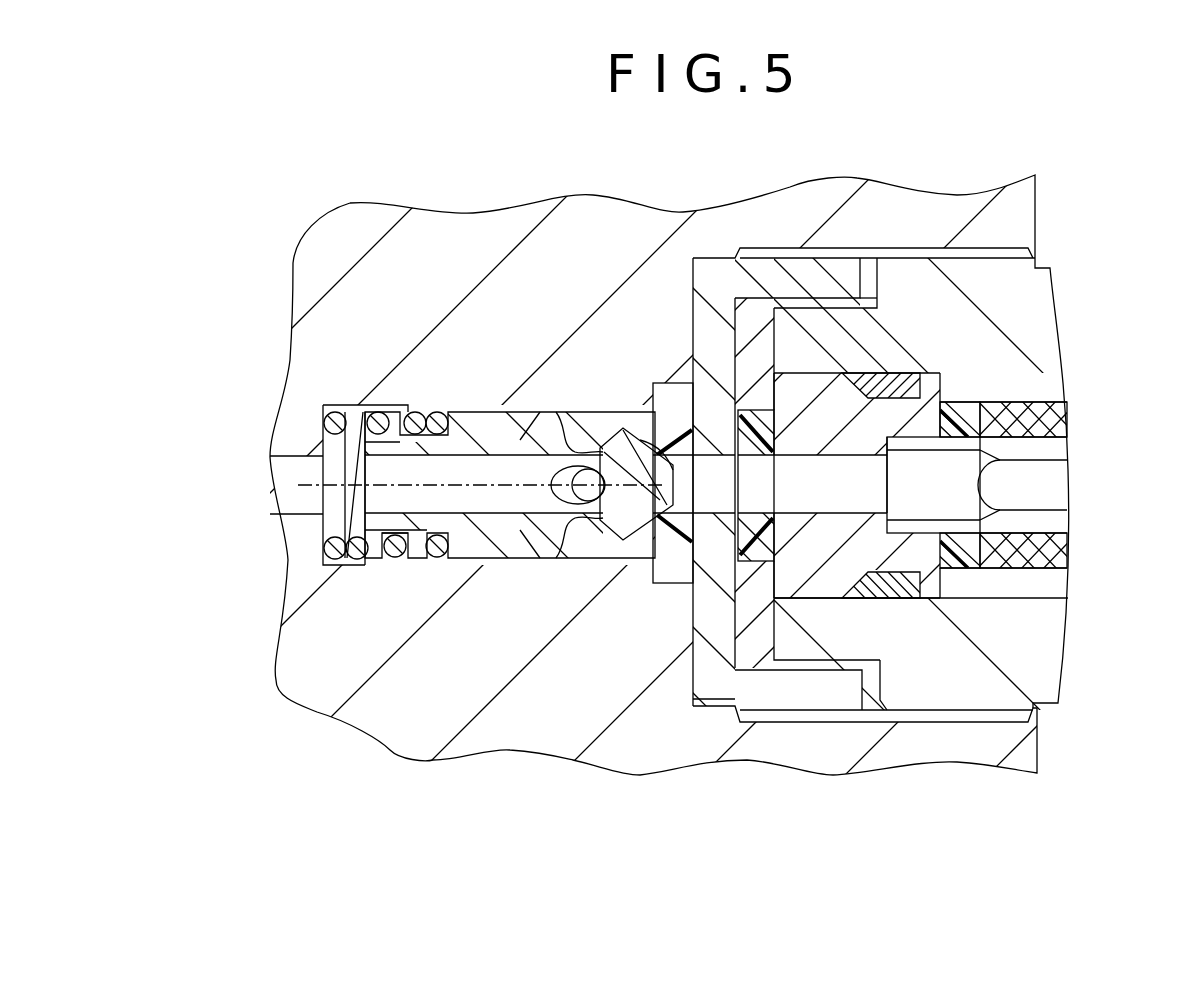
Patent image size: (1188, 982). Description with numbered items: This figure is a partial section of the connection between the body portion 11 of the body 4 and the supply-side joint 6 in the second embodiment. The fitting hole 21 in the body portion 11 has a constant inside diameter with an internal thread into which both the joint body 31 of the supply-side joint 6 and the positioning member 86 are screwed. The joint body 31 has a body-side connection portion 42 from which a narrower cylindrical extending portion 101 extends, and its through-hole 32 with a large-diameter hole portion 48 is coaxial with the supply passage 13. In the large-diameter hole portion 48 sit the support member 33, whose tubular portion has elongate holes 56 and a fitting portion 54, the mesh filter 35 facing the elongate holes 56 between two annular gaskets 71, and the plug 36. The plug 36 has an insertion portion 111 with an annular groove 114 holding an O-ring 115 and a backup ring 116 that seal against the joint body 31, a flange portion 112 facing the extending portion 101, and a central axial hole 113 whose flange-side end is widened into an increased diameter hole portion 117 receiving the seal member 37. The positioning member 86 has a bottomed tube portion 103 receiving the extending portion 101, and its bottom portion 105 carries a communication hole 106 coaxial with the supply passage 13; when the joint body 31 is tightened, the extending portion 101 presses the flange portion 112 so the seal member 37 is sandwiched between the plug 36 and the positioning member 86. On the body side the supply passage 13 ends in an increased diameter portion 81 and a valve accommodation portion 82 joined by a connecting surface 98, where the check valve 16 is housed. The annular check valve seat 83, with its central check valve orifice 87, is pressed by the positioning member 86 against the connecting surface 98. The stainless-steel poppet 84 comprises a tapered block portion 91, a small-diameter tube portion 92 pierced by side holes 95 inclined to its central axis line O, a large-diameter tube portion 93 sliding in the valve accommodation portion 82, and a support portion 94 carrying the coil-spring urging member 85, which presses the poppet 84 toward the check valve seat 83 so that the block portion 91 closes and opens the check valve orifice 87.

The body portion 11 is at (594, 491).
The housing 4 is at (356, 232).
The supply passage 13 is at (285, 502).
The check valve 16 is at (323, 464).
The urging member 85 is at (335, 410).
The poppet 84 is at (450, 415).
The valve accommodation portion 82 is at (594, 491).
The large-diameter tube portion 93 is at (520, 558).
The support portion 94 is at (384, 548).
The central axis line O is at (393, 476).
The side holes 95 is at (560, 495).
The check valve orifice 87 is at (668, 468).
The small-diameter tube portion 92 is at (630, 545).
The block portion 91 is at (648, 527).
The increased diameter portion 81 is at (794, 491).
The check valve seat 83 is at (794, 491).
The connecting surface 98 is at (673, 583).
The positioning member 86 is at (693, 268).
The bottom portion 105 is at (821, 732).
The flange portion 112 is at (766, 722).
The tube portion 103 is at (836, 722).
The extending portion 101 is at (812, 318).
The fitting hole 21 is at (912, 264).
The supply-side joint 6 is at (1047, 264).
The body-side connection portion 42 is at (831, 491).
The joint body 31 is at (1052, 318).
The large-diameter hole portion 48 is at (681, 491).
The through-hole 32 is at (1060, 596).
The seal member 37 is at (826, 456).
The communication hole 106 is at (760, 474).
The axial hole 113 is at (862, 515).
The increased diameter hole portion 117 is at (790, 600).
The fitting portion 54 is at (920, 600).
The O-ring 115 is at (904, 363).
The backup ring 116 is at (856, 380).
The insertion portion 111 is at (905, 599).
The annular gaskets 71 is at (985, 408).
The filter 35 is at (1066, 420).
The plug 36 is at (950, 600).
The annular groove 114 is at (977, 485).
The support member 33 is at (1067, 518).
The elongate holes 56 is at (1050, 472).